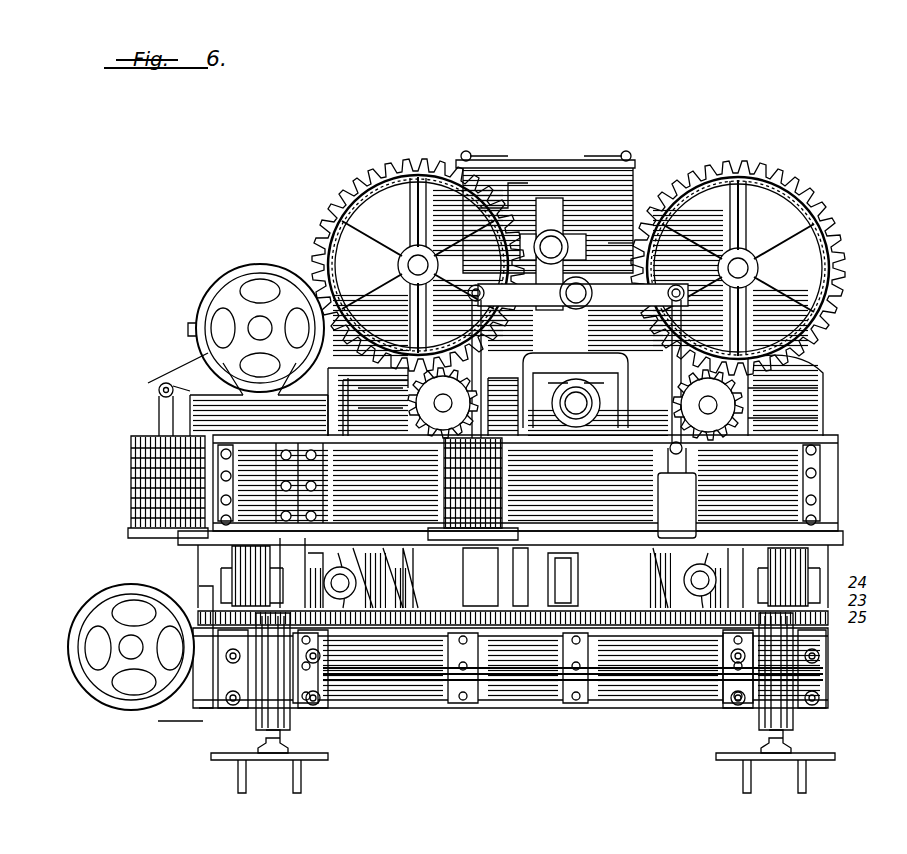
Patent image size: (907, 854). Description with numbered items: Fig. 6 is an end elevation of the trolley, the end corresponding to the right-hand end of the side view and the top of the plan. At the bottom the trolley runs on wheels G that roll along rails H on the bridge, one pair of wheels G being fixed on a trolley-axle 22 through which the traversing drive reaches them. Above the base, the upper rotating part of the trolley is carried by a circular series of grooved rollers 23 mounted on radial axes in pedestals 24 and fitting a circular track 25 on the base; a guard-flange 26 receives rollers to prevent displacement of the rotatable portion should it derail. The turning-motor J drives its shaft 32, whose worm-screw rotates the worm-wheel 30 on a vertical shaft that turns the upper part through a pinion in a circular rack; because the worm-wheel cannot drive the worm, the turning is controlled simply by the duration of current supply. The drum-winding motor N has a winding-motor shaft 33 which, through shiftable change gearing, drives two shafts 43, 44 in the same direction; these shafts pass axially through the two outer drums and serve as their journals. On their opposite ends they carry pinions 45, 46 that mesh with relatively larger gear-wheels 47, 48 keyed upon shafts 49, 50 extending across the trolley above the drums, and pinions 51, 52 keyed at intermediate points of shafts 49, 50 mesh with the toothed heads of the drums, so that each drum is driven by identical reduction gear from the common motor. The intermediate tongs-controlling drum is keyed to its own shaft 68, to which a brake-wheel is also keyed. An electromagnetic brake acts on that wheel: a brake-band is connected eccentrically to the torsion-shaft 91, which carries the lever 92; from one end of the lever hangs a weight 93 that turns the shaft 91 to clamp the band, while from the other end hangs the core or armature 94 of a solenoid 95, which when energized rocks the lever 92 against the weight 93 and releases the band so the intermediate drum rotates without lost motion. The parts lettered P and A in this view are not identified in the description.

The trolley-axle 22 is at (540, 665).
The grooved rollers 23 is at (370, 577).
The pedestals 24 is at (355, 560).
The circular track 25 is at (430, 598).
The guard-flange 26 is at (540, 576).
The worm-wheel 30 is at (205, 345).
The shaft of trolley-rotating motor 32 is at (250, 320).
The winding-motor shaft 33 is at (548, 236).
The shaft 43 is at (815, 392).
The shaft 44 is at (345, 390).
The pinion 45 is at (708, 405).
The pinion 46 is at (443, 403).
The gear-wheel 47 is at (738, 257).
The gear-wheel 48 is at (418, 254).
The shaft 49 is at (745, 238).
The shaft 50 is at (400, 248).
The pinion 51 is at (735, 258).
The pinion 52 is at (360, 178).
The shaft of intermediate drum 68 is at (570, 395).
The torsion-shaft 91 is at (580, 285).
The lever 92 is at (578, 296).
The weight 93 is at (677, 493).
The core or armature 94 is at (480, 565).
The solenoid 95 is at (436, 478).
The turning-motor J is at (256, 314).
The drum-winding motor N is at (545, 212).
The hand wheel P is at (140, 640).
The wheels G is at (808, 712).
The rails H is at (828, 738).
The track support A is at (523, 773).